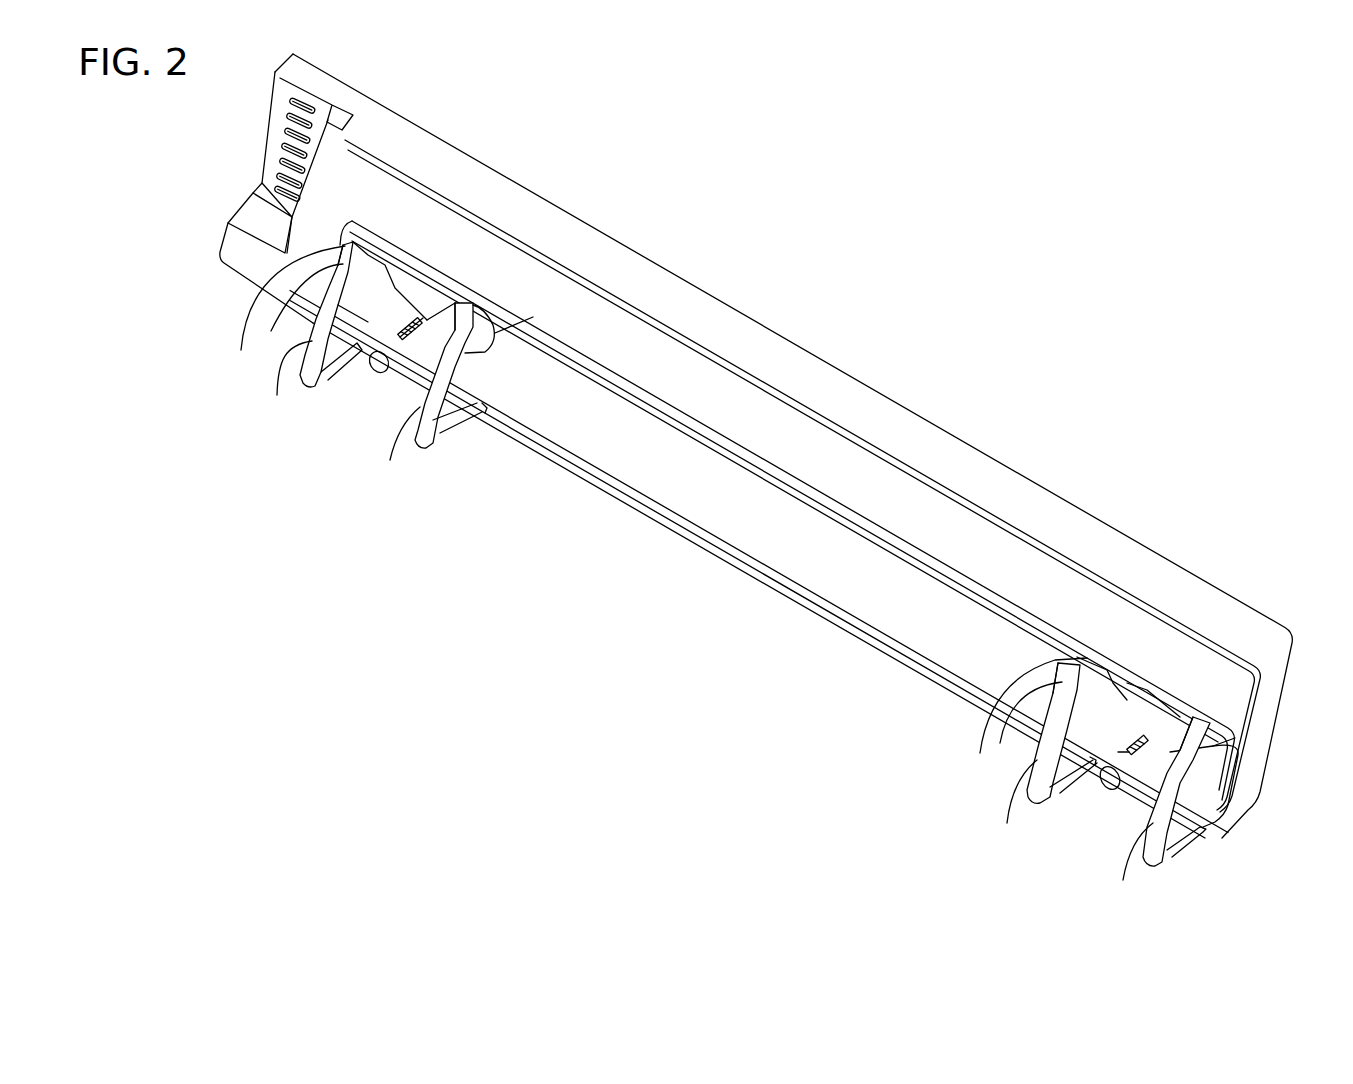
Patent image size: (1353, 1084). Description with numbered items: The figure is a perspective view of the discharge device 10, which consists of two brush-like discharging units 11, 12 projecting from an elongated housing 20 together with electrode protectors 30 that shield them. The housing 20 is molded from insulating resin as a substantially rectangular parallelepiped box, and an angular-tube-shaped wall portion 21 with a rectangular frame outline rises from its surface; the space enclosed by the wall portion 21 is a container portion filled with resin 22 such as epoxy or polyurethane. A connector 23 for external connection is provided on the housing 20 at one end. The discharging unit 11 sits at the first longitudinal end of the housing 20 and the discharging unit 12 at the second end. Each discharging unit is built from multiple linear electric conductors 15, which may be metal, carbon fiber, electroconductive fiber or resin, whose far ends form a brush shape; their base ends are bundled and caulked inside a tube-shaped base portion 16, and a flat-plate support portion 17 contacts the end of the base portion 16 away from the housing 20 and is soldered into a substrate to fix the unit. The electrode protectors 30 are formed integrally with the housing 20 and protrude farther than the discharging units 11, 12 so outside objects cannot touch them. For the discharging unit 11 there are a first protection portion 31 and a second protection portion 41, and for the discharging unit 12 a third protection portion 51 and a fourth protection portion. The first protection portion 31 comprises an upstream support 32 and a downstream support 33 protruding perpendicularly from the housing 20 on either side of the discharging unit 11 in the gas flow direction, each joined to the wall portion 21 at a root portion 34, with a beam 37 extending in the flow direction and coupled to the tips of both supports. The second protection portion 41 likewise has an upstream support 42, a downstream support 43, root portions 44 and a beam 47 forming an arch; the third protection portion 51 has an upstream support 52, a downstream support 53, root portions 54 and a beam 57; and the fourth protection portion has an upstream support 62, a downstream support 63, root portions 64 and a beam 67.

The discharge device 10 is at (968, 366).
The discharging unit 11 is at (1115, 804).
The discharging unit 12 is at (383, 384).
The electric conductor 15 is at (400, 335).
The base portion 16 is at (423, 328).
The support portion 17 is at (456, 302).
The housing 20 is at (752, 403).
The wall portion 21 is at (687, 535).
The resin 22 is at (845, 578).
The connector 23 is at (277, 123).
The electrode protector 30 is at (307, 401).
The first protection portion 31 is at (1186, 733).
The upstream support 32 is at (1177, 840).
The downstream support 33 is at (1193, 767).
The root portion 34 is at (1210, 745).
The beam 37 is at (1129, 865).
The second protection portion 41 is at (1055, 678).
The upstream support 42 is at (1065, 780).
The downstream support 43 is at (1056, 717).
The root portion 44 is at (1083, 815).
The beam 47 is at (1013, 801).
The third protection portion 51 is at (340, 255).
The upstream support 52 is at (340, 365).
The downstream support 53 is at (340, 302).
The root portion 54 is at (353, 343).
The beam 57 is at (286, 384).
The upstream support 62 is at (453, 420).
The downstream support 63 is at (545, 330).
The root portion 64 is at (495, 345).
The beam 67 is at (396, 448).